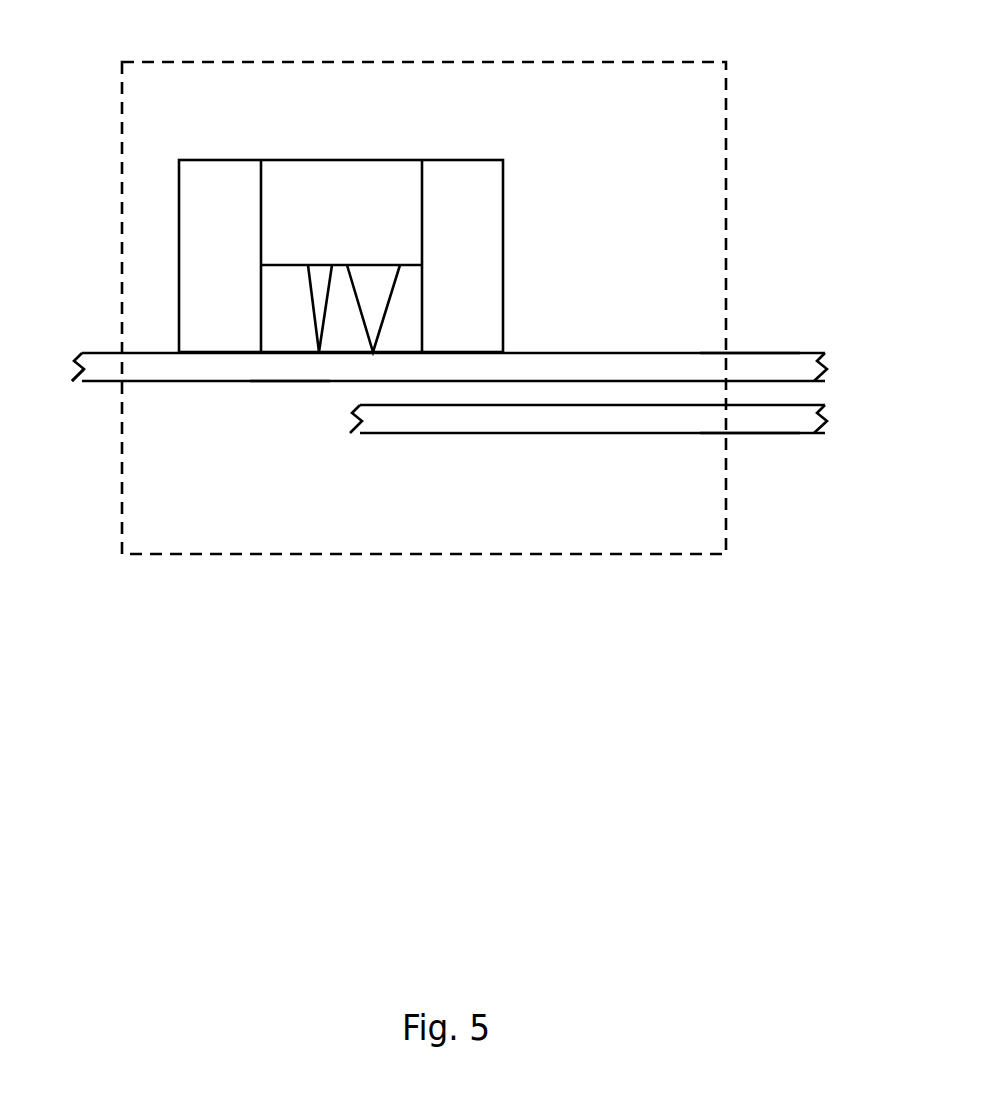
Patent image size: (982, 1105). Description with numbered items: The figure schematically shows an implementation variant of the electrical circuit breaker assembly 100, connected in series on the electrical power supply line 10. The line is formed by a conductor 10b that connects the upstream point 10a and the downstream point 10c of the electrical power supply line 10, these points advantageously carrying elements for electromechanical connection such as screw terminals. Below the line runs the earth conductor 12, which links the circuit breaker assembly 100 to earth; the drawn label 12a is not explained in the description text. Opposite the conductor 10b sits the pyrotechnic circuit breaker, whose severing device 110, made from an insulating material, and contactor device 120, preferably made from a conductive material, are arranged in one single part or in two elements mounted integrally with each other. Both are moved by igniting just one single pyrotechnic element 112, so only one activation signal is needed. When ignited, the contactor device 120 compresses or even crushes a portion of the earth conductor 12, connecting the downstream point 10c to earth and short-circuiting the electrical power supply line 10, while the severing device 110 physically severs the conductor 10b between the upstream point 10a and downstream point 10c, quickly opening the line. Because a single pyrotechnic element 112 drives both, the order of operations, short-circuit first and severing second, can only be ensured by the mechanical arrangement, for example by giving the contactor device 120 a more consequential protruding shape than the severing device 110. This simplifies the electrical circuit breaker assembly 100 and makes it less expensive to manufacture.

The electrical circuit breaker assembly 100 is at (336, 61).
The electrical power supply line 10 is at (793, 357).
The upstream point 10a is at (100, 372).
The conductor 10b is at (285, 372).
The downstream point 10c is at (752, 360).
The earth conductor 12 is at (795, 425).
The surface of second carrier layer 12a is at (742, 425).
The pyrotechnic element 112 is at (322, 177).
The contactor device 120 is at (367, 290).
The severing device 110 is at (318, 280).